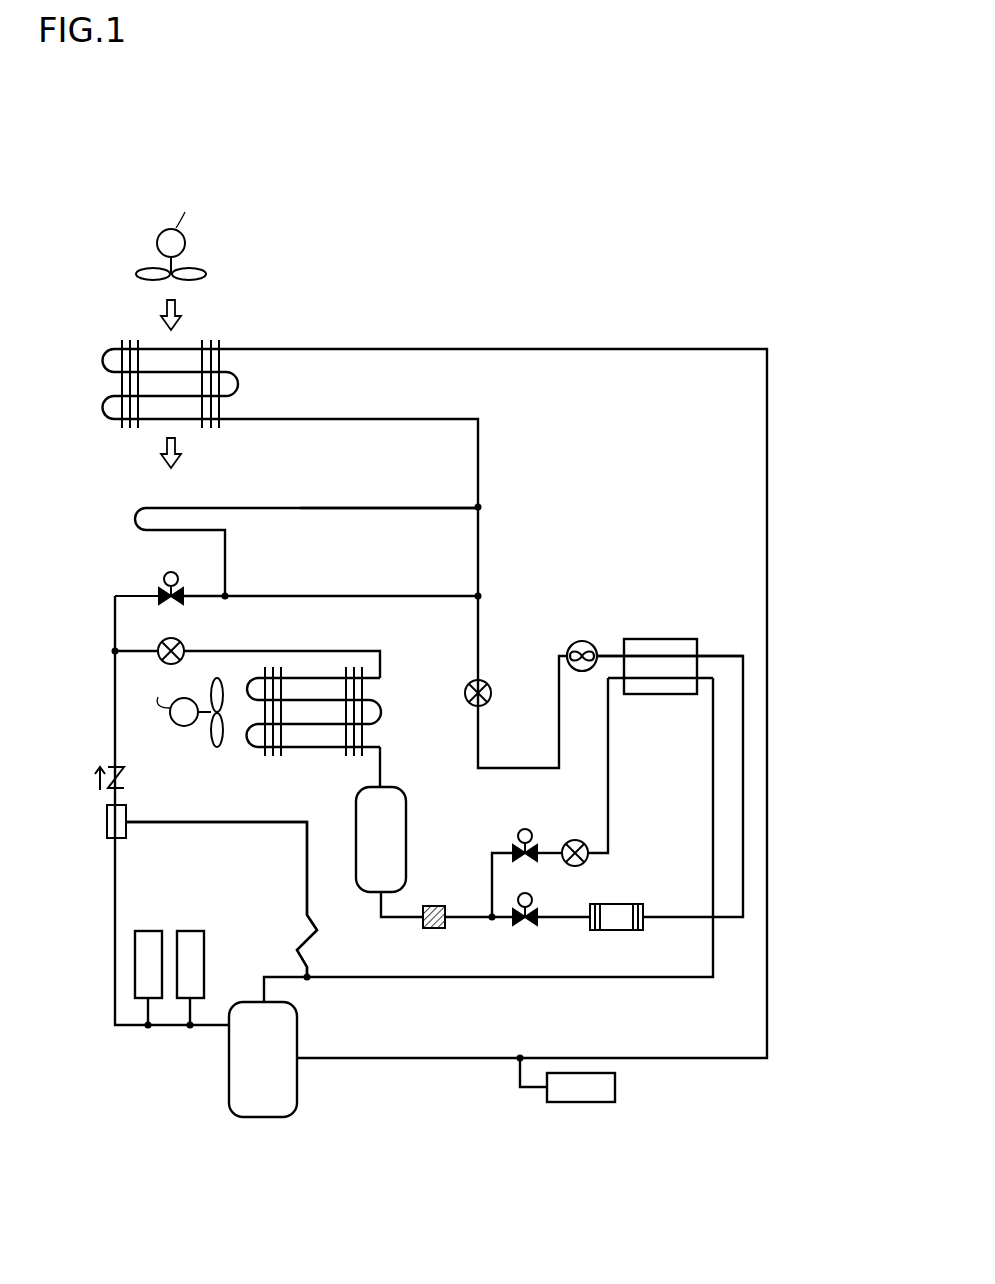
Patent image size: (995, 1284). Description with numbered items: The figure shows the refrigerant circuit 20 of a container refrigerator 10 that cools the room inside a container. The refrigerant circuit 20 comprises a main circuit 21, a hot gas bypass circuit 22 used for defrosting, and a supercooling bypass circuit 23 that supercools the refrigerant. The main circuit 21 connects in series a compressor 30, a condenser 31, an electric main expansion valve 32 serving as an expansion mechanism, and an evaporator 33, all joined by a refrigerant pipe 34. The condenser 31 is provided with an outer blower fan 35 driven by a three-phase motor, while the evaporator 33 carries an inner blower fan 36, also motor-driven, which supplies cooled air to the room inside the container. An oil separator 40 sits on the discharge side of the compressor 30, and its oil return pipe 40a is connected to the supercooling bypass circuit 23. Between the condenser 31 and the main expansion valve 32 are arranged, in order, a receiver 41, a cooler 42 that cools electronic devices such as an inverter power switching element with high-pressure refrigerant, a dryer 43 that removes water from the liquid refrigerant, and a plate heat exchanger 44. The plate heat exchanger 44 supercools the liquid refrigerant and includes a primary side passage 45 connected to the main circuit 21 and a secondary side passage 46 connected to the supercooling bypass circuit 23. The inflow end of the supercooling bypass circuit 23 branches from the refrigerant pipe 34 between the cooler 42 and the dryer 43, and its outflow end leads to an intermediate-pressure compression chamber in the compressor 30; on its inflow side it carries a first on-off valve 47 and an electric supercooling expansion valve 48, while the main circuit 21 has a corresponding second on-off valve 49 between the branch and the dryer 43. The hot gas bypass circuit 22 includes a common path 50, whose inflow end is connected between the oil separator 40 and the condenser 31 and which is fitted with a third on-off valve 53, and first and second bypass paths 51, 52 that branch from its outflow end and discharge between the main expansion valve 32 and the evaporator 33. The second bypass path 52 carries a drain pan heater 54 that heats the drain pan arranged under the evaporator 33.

The container refrigerator 10 is at (85, 160).
The refrigerant circuit 20 is at (735, 318).
The main circuit 21 is at (790, 515).
The hot gas bypass circuit 22 is at (125, 588).
The supercooling bypass circuit 23 is at (598, 803).
The compressor 30 is at (229, 1087).
The condenser 31 is at (383, 712).
The main expansion valve 32 is at (486, 681).
The evaporator 33 is at (103, 356).
The refrigerant pipe 34 is at (418, 347).
The outer blower fan 35 is at (210, 740).
The inner blower fan 36 is at (206, 274).
The oil separator 40 is at (107, 824).
The oil return pipe 40a is at (307, 858).
The receiver 41 is at (406, 818).
The cooler 42 is at (436, 905).
The dryer 43 is at (616, 932).
The plate heat exchanger 44 is at (684, 640).
The primary side passage 45 is at (642, 655).
The secondary side passage 46 is at (666, 679).
The first on-off valve 47 is at (518, 860).
The supercooling expansion valve 48 is at (584, 862).
The second on-off valve 49 is at (518, 924).
The common path 50 is at (115, 628).
The first bypass path 51 is at (380, 596).
The second bypass path 52 is at (380, 508).
The third on-off valve 53 is at (180, 602).
The drain pan heater 54 is at (134, 508).